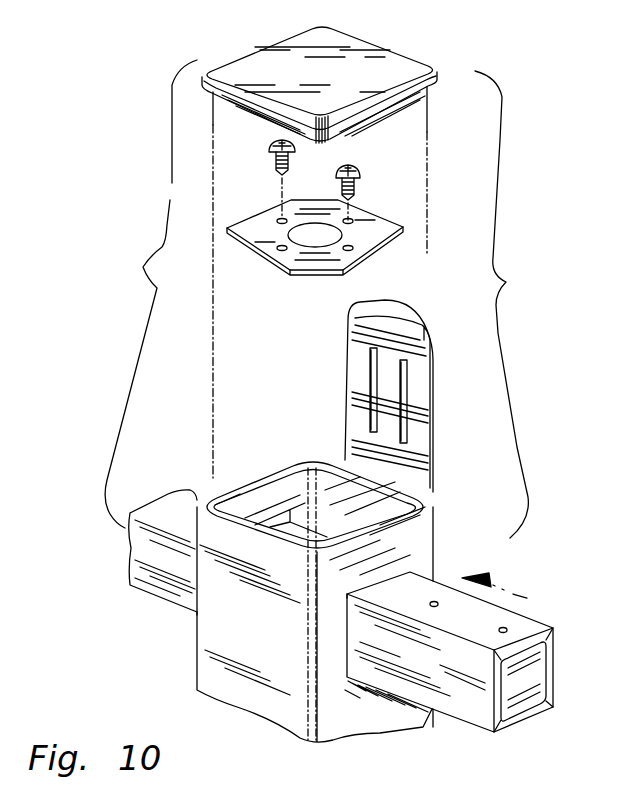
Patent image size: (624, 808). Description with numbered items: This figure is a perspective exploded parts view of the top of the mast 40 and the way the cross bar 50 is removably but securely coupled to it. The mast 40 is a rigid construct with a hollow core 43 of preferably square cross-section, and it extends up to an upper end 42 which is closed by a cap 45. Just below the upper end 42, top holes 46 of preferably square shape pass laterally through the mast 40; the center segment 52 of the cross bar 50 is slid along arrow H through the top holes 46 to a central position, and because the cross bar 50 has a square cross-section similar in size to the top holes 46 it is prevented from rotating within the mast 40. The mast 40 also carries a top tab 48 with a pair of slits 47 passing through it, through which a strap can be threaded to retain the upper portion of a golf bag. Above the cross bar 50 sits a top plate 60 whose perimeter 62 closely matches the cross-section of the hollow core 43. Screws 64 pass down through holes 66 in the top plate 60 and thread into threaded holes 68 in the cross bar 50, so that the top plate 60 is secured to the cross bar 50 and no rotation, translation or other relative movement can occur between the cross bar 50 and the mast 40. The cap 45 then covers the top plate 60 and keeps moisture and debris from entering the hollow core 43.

The mast 40 is at (217, 642).
The upper end 42 is at (342, 584).
The hollow core 43 is at (338, 488).
The cap 45 is at (350, 58).
The top holes 46 is at (345, 627).
The slits 47 is at (373, 380).
The top tab 48 is at (392, 393).
The cross bar 50 is at (147, 547).
The center segment 52 is at (441, 664).
The top plate 60 is at (267, 312).
The perimeter 62 is at (315, 251).
The screws 64 is at (270, 158).
The holes 66 is at (278, 224).
The threaded holes 68 is at (499, 628).
The arrow H is at (507, 587).